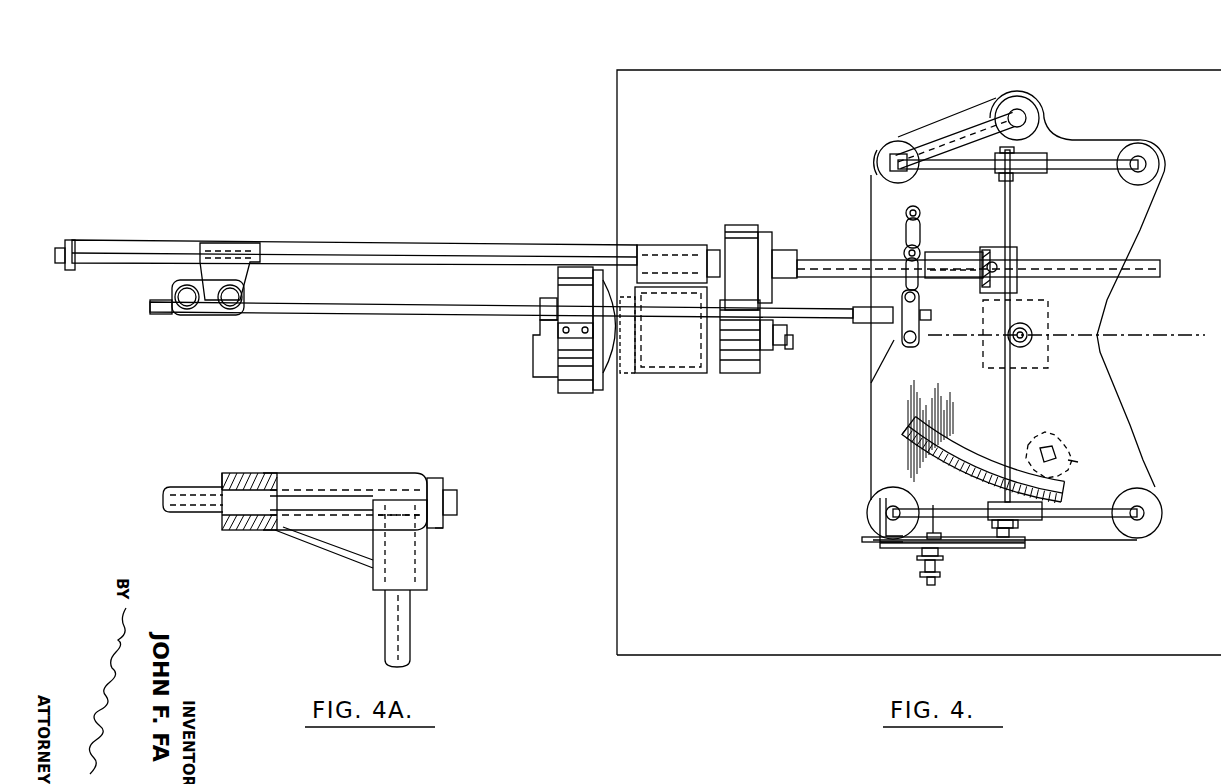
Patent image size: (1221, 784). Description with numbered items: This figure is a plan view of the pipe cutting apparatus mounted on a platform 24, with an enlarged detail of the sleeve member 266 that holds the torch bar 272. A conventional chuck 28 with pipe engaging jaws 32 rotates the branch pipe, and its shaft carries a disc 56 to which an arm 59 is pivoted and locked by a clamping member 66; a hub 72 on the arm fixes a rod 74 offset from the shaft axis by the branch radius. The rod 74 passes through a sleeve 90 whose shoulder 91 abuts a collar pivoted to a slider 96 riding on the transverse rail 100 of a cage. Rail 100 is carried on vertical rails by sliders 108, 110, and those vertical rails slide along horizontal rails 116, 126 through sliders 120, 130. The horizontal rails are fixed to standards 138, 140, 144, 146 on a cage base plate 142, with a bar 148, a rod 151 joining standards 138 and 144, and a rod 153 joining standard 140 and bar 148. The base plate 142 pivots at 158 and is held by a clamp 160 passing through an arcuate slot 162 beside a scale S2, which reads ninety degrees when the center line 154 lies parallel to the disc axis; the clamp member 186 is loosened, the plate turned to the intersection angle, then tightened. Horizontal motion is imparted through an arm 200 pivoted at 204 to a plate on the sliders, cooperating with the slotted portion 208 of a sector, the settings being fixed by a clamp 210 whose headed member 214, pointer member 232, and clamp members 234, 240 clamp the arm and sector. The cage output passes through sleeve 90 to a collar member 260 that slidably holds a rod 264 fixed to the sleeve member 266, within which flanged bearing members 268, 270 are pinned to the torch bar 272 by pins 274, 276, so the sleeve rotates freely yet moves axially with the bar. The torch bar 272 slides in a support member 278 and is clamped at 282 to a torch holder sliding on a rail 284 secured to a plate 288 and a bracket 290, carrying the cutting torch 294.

In FIG. 4, the platform 24 is at (1135, 80).
In FIG. 4, the chuck 28 is at (575, 405).
In FIG. 4, the pipe engaging jaws 32 is at (540, 350).
In FIG. 4, the disc 56 is at (742, 235).
In FIG. 4, the arm 59 is at (766, 234).
In FIG. 4, the clamping member 66 is at (793, 346).
In FIG. 4, the hub 72 is at (787, 254).
In FIG. 4, the rod 74 is at (1160, 272).
In FIG. 4, the sleeve 90 is at (948, 278).
In FIG. 4, the shoulder 91 is at (985, 250).
In FIG. 4, the slider 96 is at (1018, 252).
In FIG. 4, the transverse rail 100 is at (1010, 216).
In FIG. 4, the slider 108 is at (988, 516).
In FIG. 4, the slider 110 is at (999, 178).
In FIG. 4, the horizontal rail 116 is at (1112, 520).
In FIG. 4, the slider 120 is at (1013, 525).
In FIG. 4, the horizontal rail 126 is at (1085, 170).
In FIG. 4, the slider 130 is at (1035, 172).
In FIG. 4, the standard 138 is at (1163, 513).
In FIG. 4, the standard 140 is at (885, 513).
In FIG. 4, the cage base plate 142 is at (871, 418).
In FIG. 4, the standard 144 is at (1161, 165).
In FIG. 4, the standard 146 is at (1026, 116).
In FIG. 4, the bar 148 is at (948, 132).
In FIG. 4, the rod 151 is at (1135, 402).
In FIG. 4, the rod 153 is at (894, 343).
In FIG. 4, the center line 154 is at (1170, 335).
In FIG. 4, the pivot point 158 is at (1030, 330).
In FIG. 4, the clamp 160 is at (1075, 432).
In FIG. 4, the arcuate slot 162 is at (1000, 458).
In FIG. 4, the clamp member 186 is at (1078, 462).
In FIG. 4, the arm 200 is at (862, 540).
In FIG. 4, the pivot 204 is at (1010, 537).
In FIG. 4, the slotted portion 208 is at (995, 548).
In FIG. 4, the clamp 210 is at (903, 590).
In FIG. 4, the headed member 214 is at (933, 530).
In FIG. 4, the pointer member 232 is at (938, 560).
In FIG. 4, the clamp member 234 is at (917, 558).
In FIG. 4, the clamp member 240 is at (938, 580).
In FIG. 4, the collar member 260 is at (925, 238).
In FIG. 4A, the rod 264 is at (410, 643).
In FIG. 4, the sleeve member 266 is at (919, 340).
In FIG. 4A, the sleeve member 266 is at (350, 473).
In FIG. 4A, the flanged bearing member 268 is at (222, 525).
In FIG. 4A, the flanged bearing member 270 is at (445, 526).
In FIG. 4, the torch bar 272 is at (360, 312).
In FIG. 4A, the torch bar 272 is at (175, 505).
In FIG. 4A, the pin 274 is at (218, 487).
In FIG. 4A, the pin 276 is at (457, 500).
In FIG. 4, the support member 278 is at (680, 366).
In FIG. 4, the clamp 282 is at (187, 310).
In FIG. 4, the rail 284 is at (110, 252).
In FIG. 4, the plate 288 is at (72, 268).
In FIG. 4, the bracket 290 is at (672, 254).
In FIG. 4, the cutting torch 294 is at (267, 296).
In FIG. 4, the scale S2 is at (935, 530).